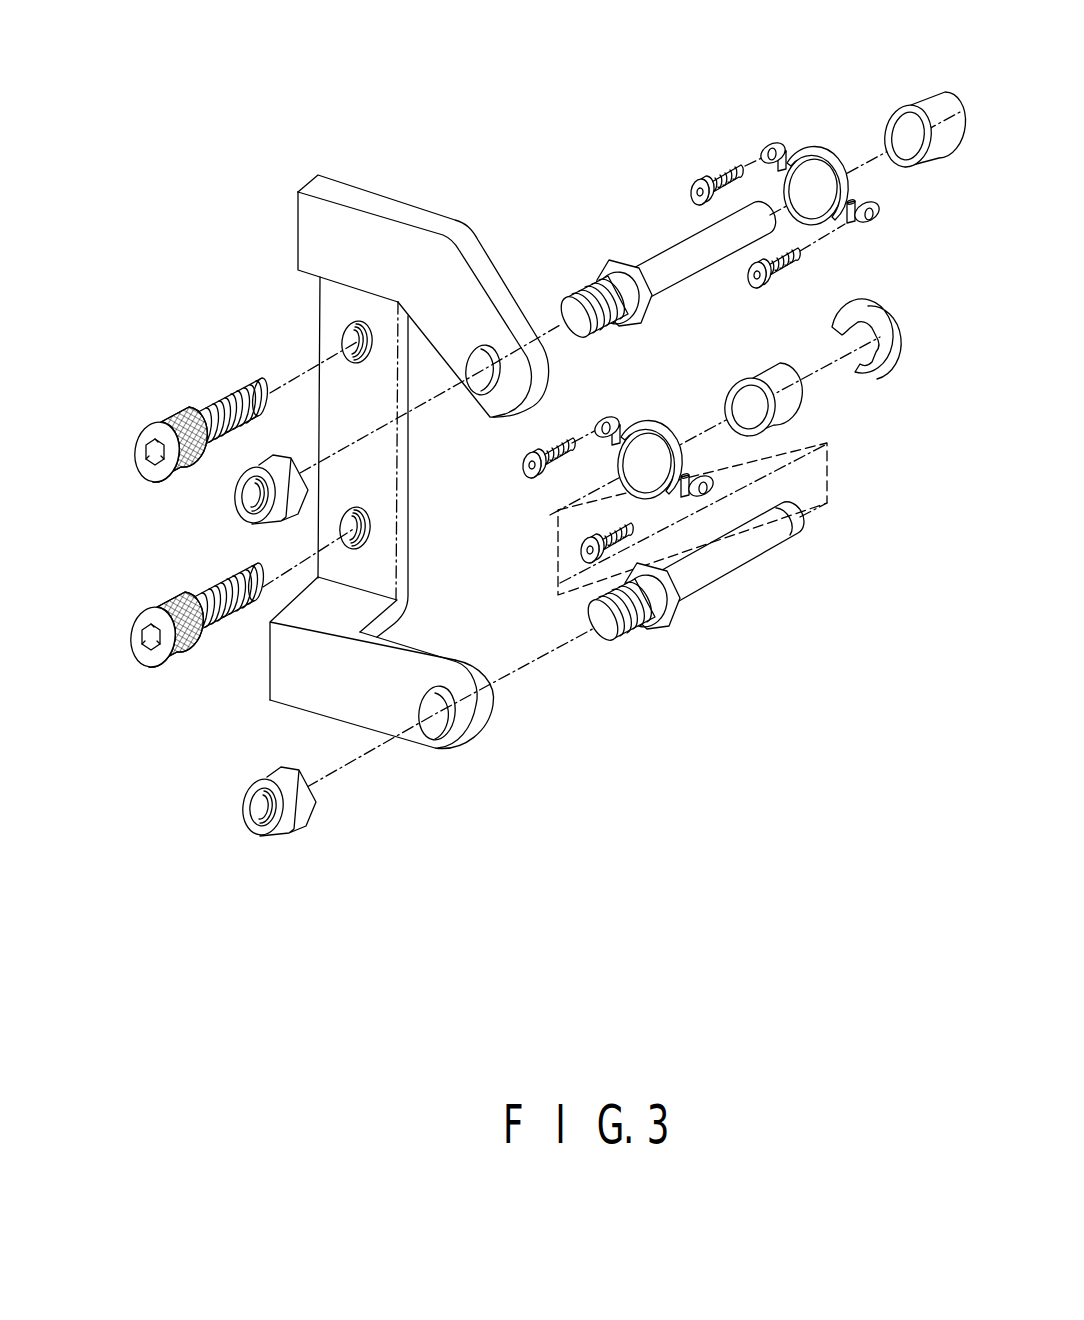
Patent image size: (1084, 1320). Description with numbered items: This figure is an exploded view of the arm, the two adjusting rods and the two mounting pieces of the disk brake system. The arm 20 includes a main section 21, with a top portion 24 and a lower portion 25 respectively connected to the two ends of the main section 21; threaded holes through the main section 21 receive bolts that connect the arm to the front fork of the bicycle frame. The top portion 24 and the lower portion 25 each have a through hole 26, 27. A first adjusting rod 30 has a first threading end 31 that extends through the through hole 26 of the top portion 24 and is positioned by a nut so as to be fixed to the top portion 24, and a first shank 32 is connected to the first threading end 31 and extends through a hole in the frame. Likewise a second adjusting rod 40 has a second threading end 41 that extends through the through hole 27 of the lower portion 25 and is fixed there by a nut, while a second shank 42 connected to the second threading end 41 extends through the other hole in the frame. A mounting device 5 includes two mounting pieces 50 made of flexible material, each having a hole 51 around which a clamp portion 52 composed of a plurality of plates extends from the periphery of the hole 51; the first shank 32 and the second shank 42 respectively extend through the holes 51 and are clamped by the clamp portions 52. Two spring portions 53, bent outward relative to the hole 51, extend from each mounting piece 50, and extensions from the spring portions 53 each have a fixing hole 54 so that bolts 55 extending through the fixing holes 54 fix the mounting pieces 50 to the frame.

The mounting device 5 is at (262, 112).
The arm 20 is at (178, 533).
The main section 21 is at (328, 345).
The top portion 24 is at (320, 245).
The lower portion 25 is at (277, 672).
The through hole 26 is at (482, 372).
The through hole 27 is at (440, 730).
The first adjusting rod 30 is at (608, 228).
The first threading end 31 is at (585, 290).
The first shank 32 is at (673, 255).
The second adjusting rod 40 is at (716, 640).
The second threading end 41 is at (607, 622).
The second shank 42 is at (737, 560).
The mounting piece 50 is at (813, 157).
The hole 51 is at (797, 153).
The clamp portion 52 is at (827, 188).
The spring portion 53 is at (842, 217).
The fixing hole 54 is at (873, 223).
The bolt 55 is at (718, 170).